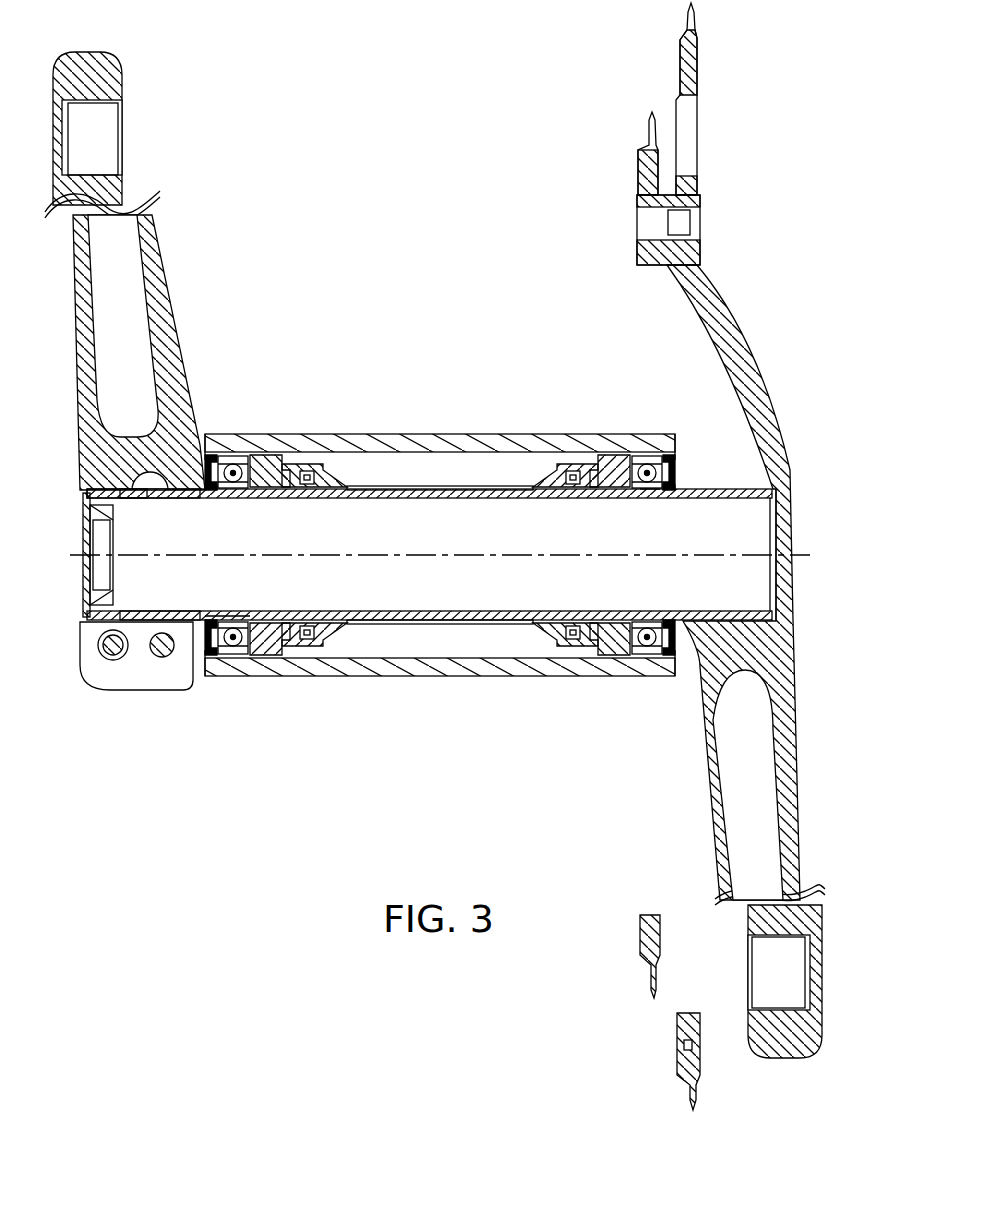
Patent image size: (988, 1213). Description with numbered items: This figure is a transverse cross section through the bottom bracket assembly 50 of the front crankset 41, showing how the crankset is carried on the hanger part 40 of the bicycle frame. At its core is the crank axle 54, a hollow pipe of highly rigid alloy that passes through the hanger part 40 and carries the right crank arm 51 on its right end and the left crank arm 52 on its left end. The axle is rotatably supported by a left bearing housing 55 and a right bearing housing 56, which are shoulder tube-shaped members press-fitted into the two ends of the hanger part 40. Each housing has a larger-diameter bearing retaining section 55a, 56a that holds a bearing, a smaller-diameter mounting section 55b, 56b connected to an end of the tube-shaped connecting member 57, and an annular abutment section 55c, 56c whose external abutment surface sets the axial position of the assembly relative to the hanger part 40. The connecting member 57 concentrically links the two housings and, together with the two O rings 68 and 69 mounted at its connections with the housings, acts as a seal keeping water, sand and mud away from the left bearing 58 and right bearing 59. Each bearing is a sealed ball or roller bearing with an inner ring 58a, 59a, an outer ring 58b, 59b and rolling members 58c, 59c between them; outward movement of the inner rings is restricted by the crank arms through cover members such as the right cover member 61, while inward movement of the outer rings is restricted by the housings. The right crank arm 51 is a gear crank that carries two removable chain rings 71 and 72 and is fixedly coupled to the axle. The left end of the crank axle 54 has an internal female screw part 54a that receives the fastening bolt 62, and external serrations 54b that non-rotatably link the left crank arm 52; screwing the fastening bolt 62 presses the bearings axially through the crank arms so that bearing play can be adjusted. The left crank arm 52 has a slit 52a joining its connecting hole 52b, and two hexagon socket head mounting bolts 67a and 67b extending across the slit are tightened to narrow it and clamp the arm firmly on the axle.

The hanger part 40 is at (462, 433).
The front crankset 41 is at (740, 100).
The bottom bracket assembly 50 is at (405, 380).
The right crank arm 51 is at (715, 830).
The left crank arm 52 is at (158, 248).
The slit 52a is at (177, 670).
The connecting hole 52b is at (145, 507).
The crank axle 54 is at (413, 500).
The female screw part 54a is at (145, 608).
The external serrations 54b is at (177, 500).
The left bearing housing 55 is at (255, 428).
The left bearing retaining section 55a is at (230, 456).
The left mounting section 55b is at (303, 470).
The left annular abutment section 55c is at (207, 443).
The right bearing housing 56 is at (612, 428).
The right bearing retaining section 56a is at (652, 456).
The right mounting section 56b is at (577, 470).
The right annular abutment section 56c is at (680, 453).
The tube-shaped connecting member 57 is at (440, 487).
The left bearing 58 is at (232, 500).
The inner ring of left bearing 58a is at (222, 620).
The outer ring of left bearing 58b is at (242, 652).
The rolling members of left bearing 58c is at (237, 628).
The right bearing 59 is at (645, 500).
The inner ring of right bearing 59a is at (656, 622).
The outer ring of right bearing 59b is at (633, 656).
The rolling members of right bearing 59c is at (645, 626).
The right cover member 61 is at (212, 492).
The fastening bolt 62 is at (82, 576).
The mounting bolt 67a is at (107, 660).
The mounting bolt 67b is at (160, 660).
The O ring 68 is at (308, 626).
The O ring 69 is at (567, 626).
The chain ring 71 is at (636, 170).
The chain ring 72 is at (680, 80).